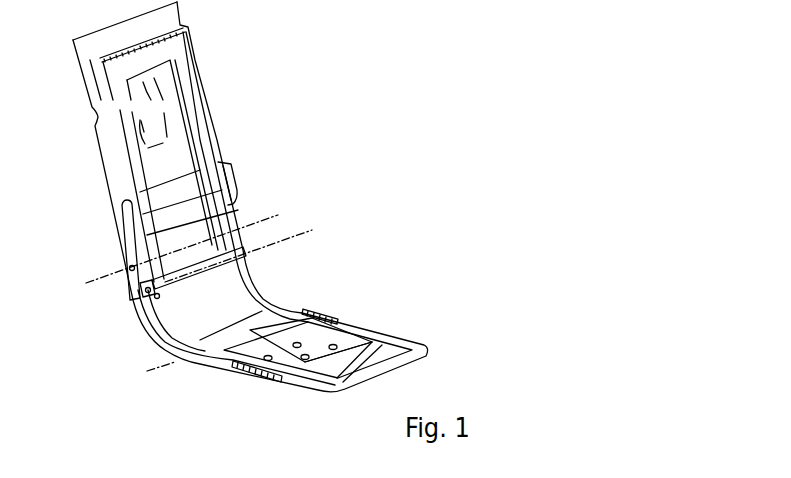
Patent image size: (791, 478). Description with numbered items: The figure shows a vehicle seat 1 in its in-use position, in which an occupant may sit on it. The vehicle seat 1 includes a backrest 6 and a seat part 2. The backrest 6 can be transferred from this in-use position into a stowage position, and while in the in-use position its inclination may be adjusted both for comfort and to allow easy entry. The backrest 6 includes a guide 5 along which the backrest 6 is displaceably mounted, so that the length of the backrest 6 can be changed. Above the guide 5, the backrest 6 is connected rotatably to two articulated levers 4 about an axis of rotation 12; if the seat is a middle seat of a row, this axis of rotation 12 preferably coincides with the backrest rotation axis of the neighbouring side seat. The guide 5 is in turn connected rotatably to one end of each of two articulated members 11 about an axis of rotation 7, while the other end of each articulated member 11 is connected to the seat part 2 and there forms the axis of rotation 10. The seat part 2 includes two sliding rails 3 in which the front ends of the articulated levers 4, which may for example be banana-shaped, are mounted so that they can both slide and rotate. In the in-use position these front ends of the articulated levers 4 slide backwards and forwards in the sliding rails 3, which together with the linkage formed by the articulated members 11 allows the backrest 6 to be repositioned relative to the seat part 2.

The vehicle seat 1 is at (275, 93).
The seat part 2 is at (385, 340).
The sliding rails 3 is at (245, 382).
The articulated levers 4 is at (152, 337).
The guide 5 is at (212, 202).
The backrest 6 is at (172, 108).
The axis of rotation 7 is at (293, 238).
The axis of rotation 10 is at (327, 292).
The articulated members 11 is at (165, 322).
The axis of rotation 12 is at (100, 278).